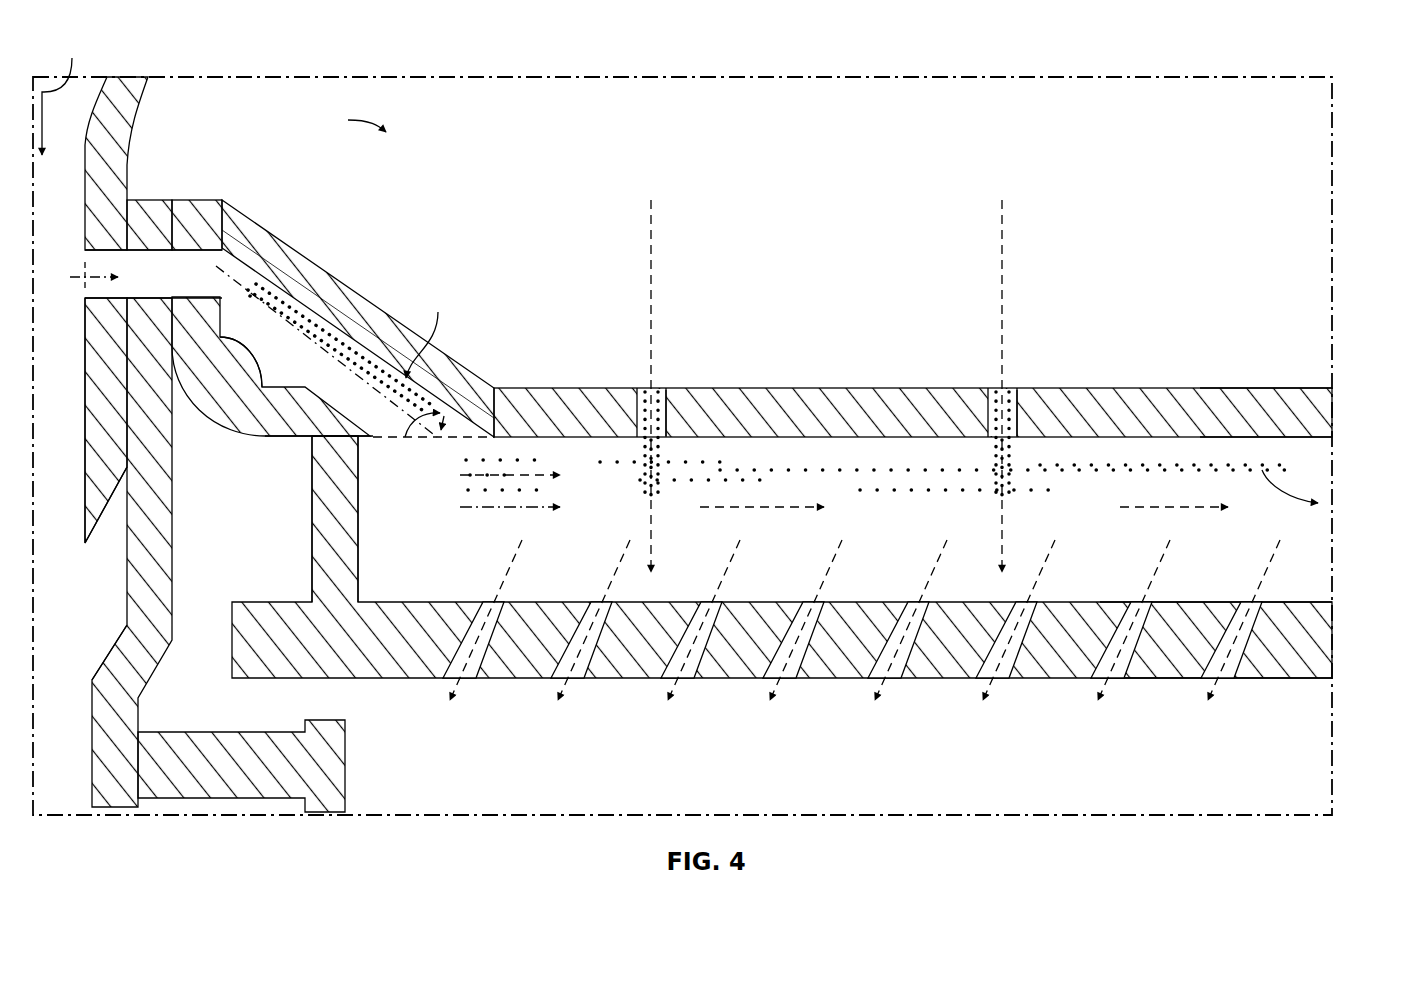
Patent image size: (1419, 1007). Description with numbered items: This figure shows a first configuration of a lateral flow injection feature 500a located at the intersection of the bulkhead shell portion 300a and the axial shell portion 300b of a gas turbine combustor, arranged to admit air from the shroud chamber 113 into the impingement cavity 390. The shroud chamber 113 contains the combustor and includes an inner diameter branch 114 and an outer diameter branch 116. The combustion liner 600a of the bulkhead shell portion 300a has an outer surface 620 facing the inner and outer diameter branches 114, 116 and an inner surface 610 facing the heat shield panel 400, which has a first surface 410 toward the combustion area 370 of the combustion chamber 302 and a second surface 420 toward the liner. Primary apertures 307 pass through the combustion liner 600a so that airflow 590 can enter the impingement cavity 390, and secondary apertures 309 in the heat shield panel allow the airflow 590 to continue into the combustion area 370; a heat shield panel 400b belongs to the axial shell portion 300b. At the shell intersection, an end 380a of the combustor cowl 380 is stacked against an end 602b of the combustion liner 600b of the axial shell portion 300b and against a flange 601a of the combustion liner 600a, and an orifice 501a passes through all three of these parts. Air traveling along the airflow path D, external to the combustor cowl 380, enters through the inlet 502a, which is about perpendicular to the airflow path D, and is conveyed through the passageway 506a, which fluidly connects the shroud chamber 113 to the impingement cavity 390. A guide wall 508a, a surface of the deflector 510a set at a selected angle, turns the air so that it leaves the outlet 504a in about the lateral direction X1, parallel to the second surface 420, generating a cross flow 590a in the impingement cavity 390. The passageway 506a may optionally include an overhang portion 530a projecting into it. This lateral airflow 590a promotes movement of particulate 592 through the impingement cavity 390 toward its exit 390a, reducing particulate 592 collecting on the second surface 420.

The airflow path D is at (60, 94).
The shroud chamber 113 is at (48, 126).
The combustor cowl 380 is at (150, 90).
The end of the combustor cowl 380a is at (100, 484).
The end of the combustion liner 602b is at (136, 202).
The flange 601a is at (190, 222).
The deflector 510a is at (326, 305).
The guide wall 508a is at (368, 348).
The passageway 506a is at (438, 332).
The outlet 504a is at (455, 432).
The lateral flow injection feature 500a is at (78, 215).
The orifice 501a is at (133, 252).
The inlet 502a is at (96, 292).
The combustion liner 600b is at (140, 683).
The axial shell portion 300b is at (84, 677).
The heat shield panel 400b is at (350, 762).
The inner diameter branch 114 is at (85, 745).
The outer diameter branch 116 is at (80, 771).
The combustion liner 600a is at (220, 405).
The outer surface 620 is at (226, 343).
The inner surface 610 is at (266, 438).
The particulate 592 is at (640, 462).
The primary apertures 307 is at (668, 413).
The heat shield panel 400 is at (1322, 655).
The overhang portion 530a is at (360, 445).
The second surface 420 is at (1322, 600).
The first surface 410 is at (1322, 680).
The secondary apertures 309 is at (490, 653).
The airflow 590 is at (252, 295).
The cross flow 590a is at (481, 476).
The lateral direction X1 is at (493, 510).
The exit 390a is at (1276, 473).
The impingement cavity 390 is at (1112, 469).
The bulkhead shell portion 300a is at (339, 118).
The combustion chamber 302 is at (770, 784).
The combustion area 370 is at (825, 784).